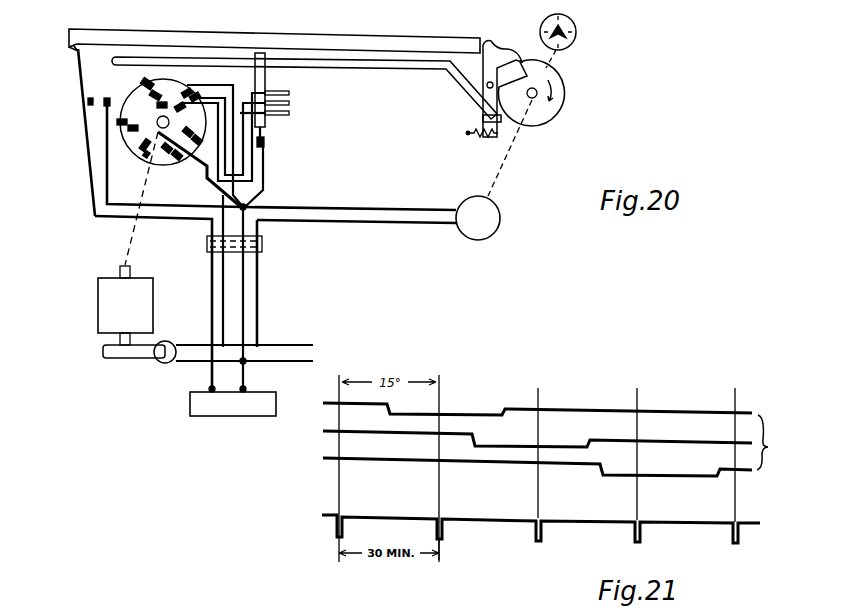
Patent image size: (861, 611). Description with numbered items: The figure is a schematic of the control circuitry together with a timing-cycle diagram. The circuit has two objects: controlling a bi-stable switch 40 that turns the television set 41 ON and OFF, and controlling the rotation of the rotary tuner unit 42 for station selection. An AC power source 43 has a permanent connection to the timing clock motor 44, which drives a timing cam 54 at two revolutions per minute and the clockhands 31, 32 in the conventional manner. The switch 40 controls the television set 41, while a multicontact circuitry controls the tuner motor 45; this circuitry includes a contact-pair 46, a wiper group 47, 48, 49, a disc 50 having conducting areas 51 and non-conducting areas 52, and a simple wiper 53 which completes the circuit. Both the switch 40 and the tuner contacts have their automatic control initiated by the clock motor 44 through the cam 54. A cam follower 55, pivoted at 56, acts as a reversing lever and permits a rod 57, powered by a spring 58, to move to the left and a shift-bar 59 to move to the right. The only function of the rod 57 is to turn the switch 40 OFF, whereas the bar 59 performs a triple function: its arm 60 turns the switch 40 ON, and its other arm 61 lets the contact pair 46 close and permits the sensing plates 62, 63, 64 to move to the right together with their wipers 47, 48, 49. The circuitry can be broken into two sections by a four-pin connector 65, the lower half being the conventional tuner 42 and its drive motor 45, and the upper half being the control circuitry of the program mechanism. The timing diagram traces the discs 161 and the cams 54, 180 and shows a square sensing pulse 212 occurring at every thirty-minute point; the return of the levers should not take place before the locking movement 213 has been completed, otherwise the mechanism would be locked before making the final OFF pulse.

In FIG. 20, the clockhand 31 is at (545, 35).
In FIG. 20, the clockhand 32 is at (572, 42).
In FIG. 20, the bi-stable switch 40 is at (79, 116).
In FIG. 20, the television set 41 is at (208, 418).
In FIG. 20, the rotary tuner unit 42 is at (98, 318).
In FIG. 20, the AC power source 43 is at (316, 354).
In FIG. 20, the timing clock motor 44 is at (470, 226).
In FIG. 20, the tuner motor 45 is at (135, 360).
In FIG. 20, the contact-pair 46 is at (273, 145).
In FIG. 20, the wiper 47 is at (150, 84).
In FIG. 20, the wiper 48 is at (150, 94).
In FIG. 20, the wiper 49 is at (157, 105).
In FIG. 20, the disc 50 is at (135, 165).
In FIG. 20, the conducting areas 51 is at (166, 158).
In FIG. 20, the non-conducting areas 52 is at (178, 160).
In FIG. 20, the simple wiper 53 is at (140, 150).
In FIG. 20, the timing cam 54 is at (552, 111).
In FIG. 20, the cam follower 55 is at (483, 115).
In FIG. 20, the pivot 56 is at (487, 86).
In FIG. 20, the rod 57 is at (388, 69).
In FIG. 20, the spring 58 is at (481, 138).
In FIG. 20, the shift-bar 59 is at (389, 36).
In FIG. 20, the arm 60 is at (72, 53).
In FIG. 20, the arm 61 is at (266, 84).
In FIG. 20, the sensing plate 62 is at (290, 93).
In FIG. 20, the sensing plate 63 is at (290, 103).
In FIG. 20, the sensing plate 64 is at (290, 113).
In FIG. 20, the 4-pin connector 65 is at (262, 245).
In FIG. 21, the discs 161 is at (774, 425).
In FIG. 21, the cam 180 is at (344, 513).
In FIG. 21, the square sensing pulse 212 is at (447, 511).
In FIG. 21, the locking movement 213 is at (455, 512).